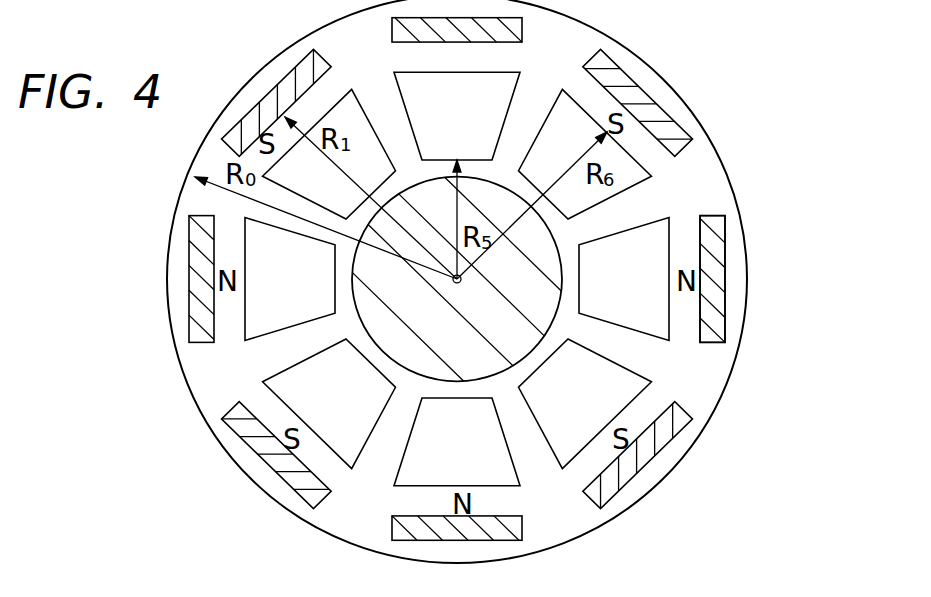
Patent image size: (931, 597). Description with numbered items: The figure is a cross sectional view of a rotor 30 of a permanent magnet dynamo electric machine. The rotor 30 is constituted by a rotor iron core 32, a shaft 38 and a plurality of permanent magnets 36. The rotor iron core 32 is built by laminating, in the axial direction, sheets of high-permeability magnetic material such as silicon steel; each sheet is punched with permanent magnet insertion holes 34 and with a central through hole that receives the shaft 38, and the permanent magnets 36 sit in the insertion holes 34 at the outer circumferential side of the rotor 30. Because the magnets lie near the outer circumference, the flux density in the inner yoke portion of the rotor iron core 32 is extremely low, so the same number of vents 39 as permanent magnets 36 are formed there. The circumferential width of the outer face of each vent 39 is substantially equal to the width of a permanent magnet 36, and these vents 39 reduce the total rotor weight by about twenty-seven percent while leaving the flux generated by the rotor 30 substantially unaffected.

The rotor 30 is at (742, 89).
The rotor iron core 32 is at (642, 203).
The permanent magnet insertion holes 34 is at (712, 291).
The permanent magnets 36 is at (708, 333).
The shaft 38 is at (515, 342).
The vents 39 is at (653, 322).